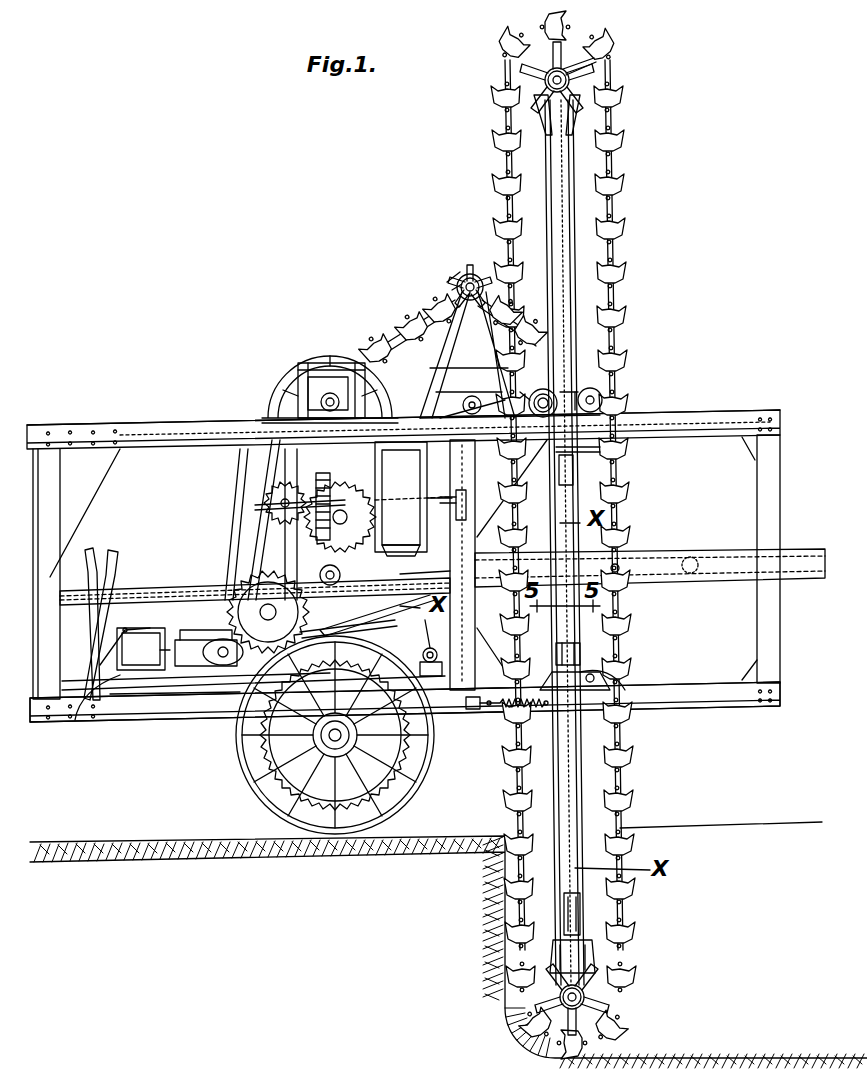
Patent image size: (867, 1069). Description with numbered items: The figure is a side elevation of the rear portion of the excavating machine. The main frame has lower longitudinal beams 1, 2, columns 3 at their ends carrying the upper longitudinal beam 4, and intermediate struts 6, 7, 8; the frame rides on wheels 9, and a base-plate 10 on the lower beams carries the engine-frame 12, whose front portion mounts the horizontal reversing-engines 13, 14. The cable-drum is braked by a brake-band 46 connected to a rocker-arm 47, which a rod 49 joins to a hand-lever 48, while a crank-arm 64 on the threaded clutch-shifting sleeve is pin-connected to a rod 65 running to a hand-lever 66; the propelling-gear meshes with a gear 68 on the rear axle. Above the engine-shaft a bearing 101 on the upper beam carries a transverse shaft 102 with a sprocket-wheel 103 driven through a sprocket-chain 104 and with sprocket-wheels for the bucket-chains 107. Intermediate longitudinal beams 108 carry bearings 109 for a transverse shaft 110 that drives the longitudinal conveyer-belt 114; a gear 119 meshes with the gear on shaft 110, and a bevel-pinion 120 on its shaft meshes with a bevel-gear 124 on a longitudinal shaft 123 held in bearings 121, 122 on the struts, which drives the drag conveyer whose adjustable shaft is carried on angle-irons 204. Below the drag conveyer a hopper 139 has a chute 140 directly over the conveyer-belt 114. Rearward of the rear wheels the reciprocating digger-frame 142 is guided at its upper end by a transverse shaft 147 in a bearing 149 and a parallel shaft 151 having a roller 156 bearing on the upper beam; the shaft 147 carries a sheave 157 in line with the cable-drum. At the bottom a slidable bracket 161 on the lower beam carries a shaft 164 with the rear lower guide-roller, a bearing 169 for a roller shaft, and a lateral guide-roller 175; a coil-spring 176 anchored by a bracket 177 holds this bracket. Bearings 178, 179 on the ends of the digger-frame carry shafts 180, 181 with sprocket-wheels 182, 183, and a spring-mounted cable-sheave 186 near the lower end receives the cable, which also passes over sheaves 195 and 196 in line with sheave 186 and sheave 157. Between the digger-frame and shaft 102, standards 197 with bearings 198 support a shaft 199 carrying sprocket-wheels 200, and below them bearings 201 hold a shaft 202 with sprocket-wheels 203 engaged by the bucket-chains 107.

The lower longitudinal beam 1 is at (695, 700).
The lower longitudinal beam 2 is at (300, 645).
The column 3 is at (772, 640).
The upper longitudinal beam 4 is at (660, 428).
The strut 6 is at (60, 575).
The strut 7 is at (476, 614).
The strut 8 is at (295, 540).
The wheel 9 is at (240, 770).
The base-plate 10 is at (140, 700).
The engine-frame 12 is at (285, 635).
The horizontal reversing-engine 13 is at (439, 666).
The horizontal reversing-engine 14 is at (141, 649).
The brake-band 46 is at (377, 613).
The rocker-arm 47 is at (440, 638).
The hand-lever 48 is at (98, 560).
The rod 49 is at (130, 700).
The crank-arm 64 is at (348, 626).
The rod 65 is at (128, 634).
The hand-lever 66 is at (118, 575).
The gear 68 is at (408, 752).
The bearing 101 is at (290, 372).
The shaft 102 is at (336, 393).
The sprocket-wheel 103 is at (318, 368).
The sprocket-chain 104 is at (280, 510).
The bucket-chain 107 is at (504, 158).
The longitudinal beam 108 is at (168, 594).
The bearing 109 is at (419, 572).
The shaft 110 is at (347, 591).
The longitudinal conveyer-belt 114 is at (690, 570).
The gear 119 is at (285, 503).
The bevel-pinion 120 is at (266, 503).
The bearing 121 is at (470, 500).
The bearing 122 is at (312, 524).
The shaft 123 is at (418, 510).
The bevel-gear 124 is at (290, 490).
The hopper 139 is at (403, 497).
The chute 140 is at (406, 537).
The digger-frame 142 is at (582, 270).
The shaft 147 is at (576, 392).
The bearing 149 is at (510, 428).
The shaft 151 is at (602, 398).
The roller 156 is at (596, 392).
The sheave 157 is at (543, 392).
The bracket 161 is at (600, 690).
The shaft 164 is at (610, 676).
The bearing 169 is at (362, 735).
The roller 175 is at (582, 654).
The coil-spring 176 is at (520, 708).
The bracket 177 is at (486, 708).
The bearing 178 is at (600, 88).
The bearing 179 is at (600, 975).
The shaft 180 is at (583, 74).
The shaft 181 is at (598, 990).
The sprocket-wheel 182 is at (540, 66).
The sprocket-wheel 183 is at (600, 1000).
The cable-sheave 186 is at (590, 912).
The sheave 195 is at (575, 474).
The sheave 196 is at (598, 449).
The standard 197 is at (445, 345).
The bearing 198 is at (476, 268).
The shaft 199 is at (462, 272).
The sprocket-wheel 200 is at (450, 280).
The bearing 201 is at (532, 375).
The shaft 202 is at (505, 370).
The sprocket-wheel 203 is at (445, 412).
The angle-iron 204 is at (412, 490).